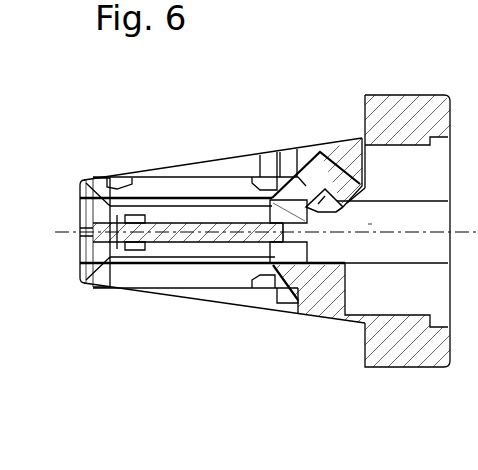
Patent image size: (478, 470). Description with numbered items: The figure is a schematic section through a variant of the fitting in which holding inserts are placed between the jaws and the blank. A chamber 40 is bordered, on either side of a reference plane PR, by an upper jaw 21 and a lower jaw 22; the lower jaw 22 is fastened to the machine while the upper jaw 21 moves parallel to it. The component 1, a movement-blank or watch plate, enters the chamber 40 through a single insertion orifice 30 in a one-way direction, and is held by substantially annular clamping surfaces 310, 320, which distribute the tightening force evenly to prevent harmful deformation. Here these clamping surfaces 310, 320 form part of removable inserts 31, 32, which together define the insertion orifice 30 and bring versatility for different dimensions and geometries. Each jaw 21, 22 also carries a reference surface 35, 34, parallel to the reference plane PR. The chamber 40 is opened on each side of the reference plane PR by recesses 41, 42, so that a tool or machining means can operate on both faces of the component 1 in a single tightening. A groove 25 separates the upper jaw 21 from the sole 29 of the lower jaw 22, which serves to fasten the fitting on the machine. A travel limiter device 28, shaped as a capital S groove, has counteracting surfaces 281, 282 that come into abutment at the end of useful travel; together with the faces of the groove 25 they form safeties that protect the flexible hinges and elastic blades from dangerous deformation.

The component 1 is at (198, 232).
The upper jaw 21 is at (313, 156).
The lower jaw 22 is at (331, 292).
The groove 25 is at (361, 137).
The travel limiter device 28 is at (345, 221).
The sole 29 is at (402, 348).
The insertion orifice 30 is at (82, 236).
The removable insert 31 is at (104, 203).
The removable insert 32 is at (97, 270).
The reference surface 34 is at (82, 229).
The reference surface 35 is at (100, 258).
The chamber 40 is at (223, 206).
The recess 41 is at (156, 183).
The recess 42 is at (182, 270).
The counteracting surface 281 is at (313, 314).
The counteracting surface 282 is at (347, 203).
The clamping surface 310 is at (283, 229).
The clamping surface 320 is at (104, 232).
The reference plane PR is at (371, 223).